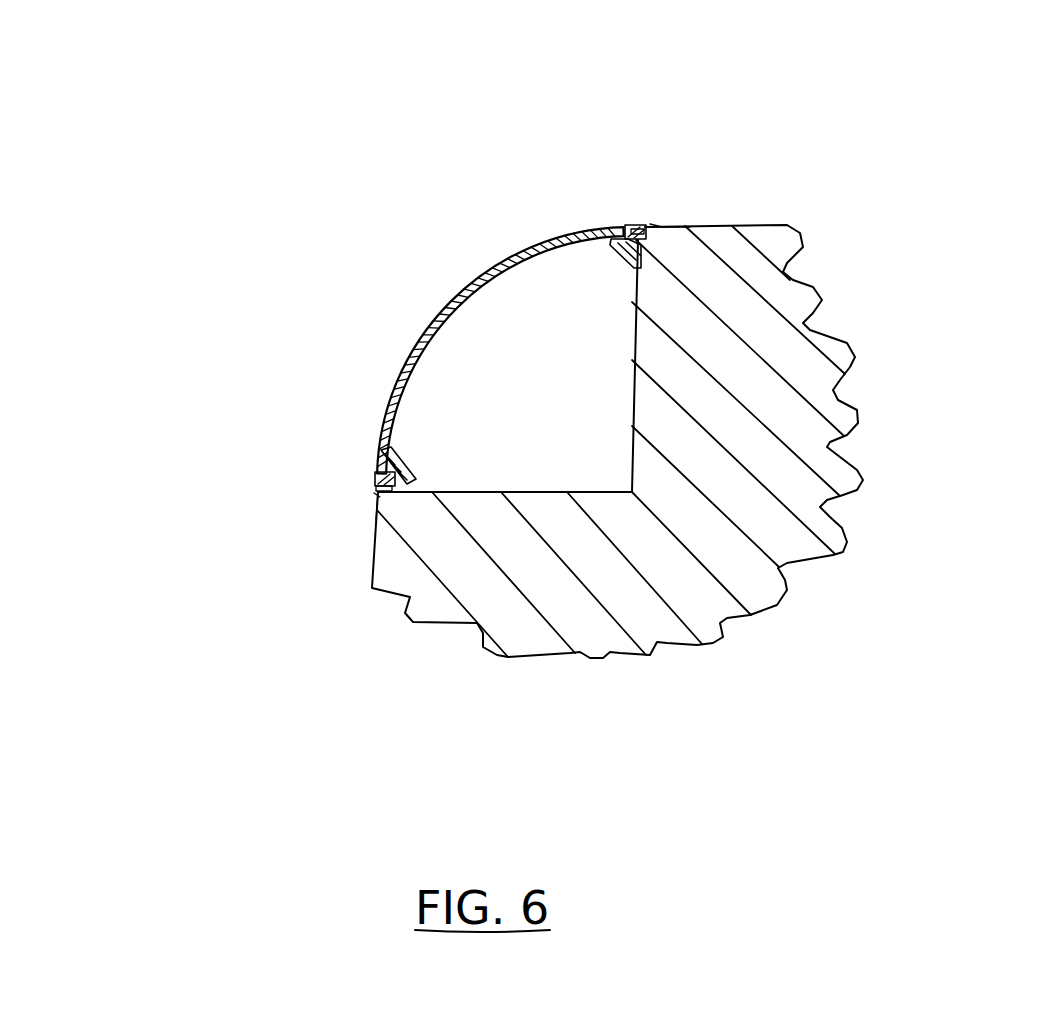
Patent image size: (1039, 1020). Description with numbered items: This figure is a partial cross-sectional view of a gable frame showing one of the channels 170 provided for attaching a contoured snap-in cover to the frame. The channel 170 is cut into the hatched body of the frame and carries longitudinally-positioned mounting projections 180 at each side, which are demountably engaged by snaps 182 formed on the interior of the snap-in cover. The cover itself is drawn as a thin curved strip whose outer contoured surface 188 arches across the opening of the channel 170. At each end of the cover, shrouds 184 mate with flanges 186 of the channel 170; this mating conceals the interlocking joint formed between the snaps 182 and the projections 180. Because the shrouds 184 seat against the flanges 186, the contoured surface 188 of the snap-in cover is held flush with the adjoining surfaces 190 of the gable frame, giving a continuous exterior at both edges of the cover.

The channel 170 is at (590, 433).
The mounting projection 180 is at (377, 473).
The snap 182 is at (405, 461).
The shroud 184 is at (375, 478).
The flange 186 is at (375, 498).
The contoured surface 188 is at (485, 277).
The adjoining surface 190 is at (375, 493).